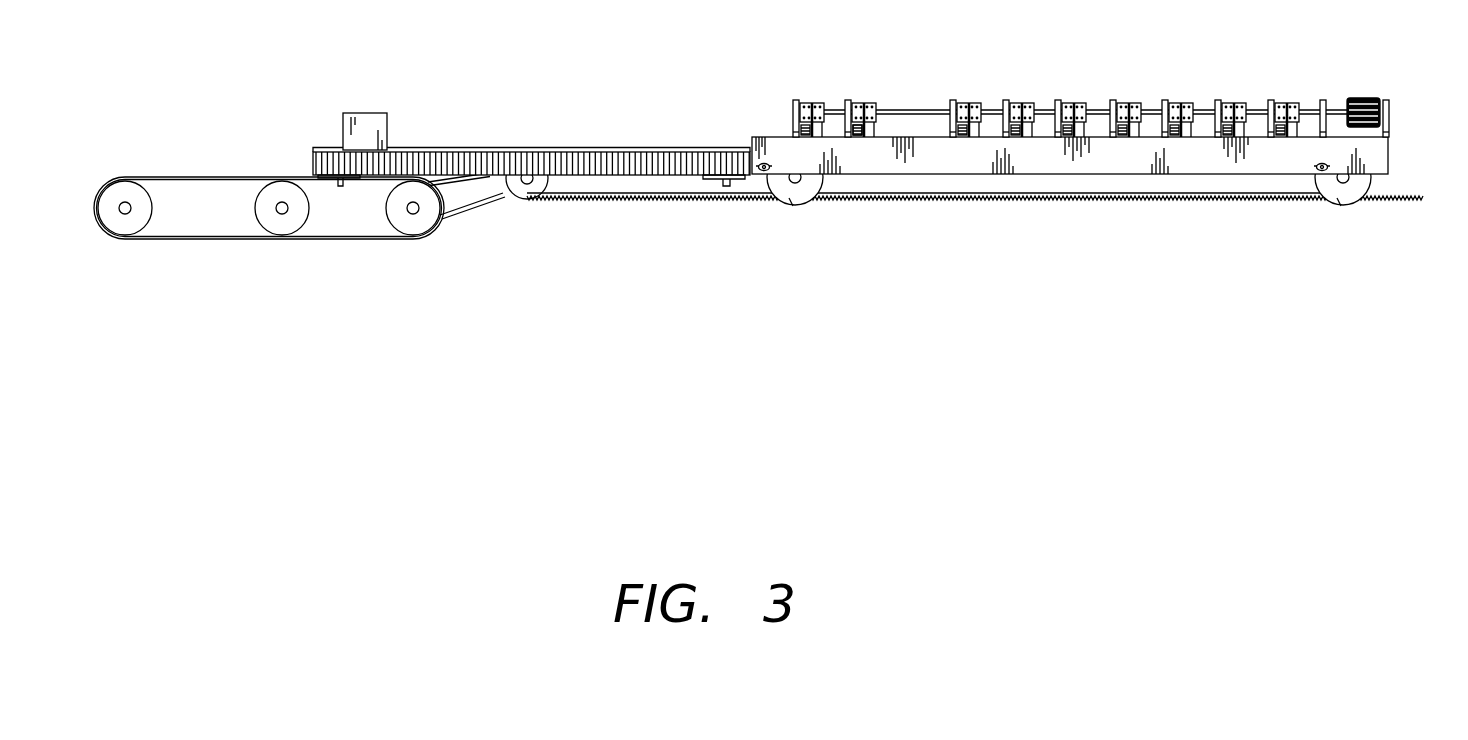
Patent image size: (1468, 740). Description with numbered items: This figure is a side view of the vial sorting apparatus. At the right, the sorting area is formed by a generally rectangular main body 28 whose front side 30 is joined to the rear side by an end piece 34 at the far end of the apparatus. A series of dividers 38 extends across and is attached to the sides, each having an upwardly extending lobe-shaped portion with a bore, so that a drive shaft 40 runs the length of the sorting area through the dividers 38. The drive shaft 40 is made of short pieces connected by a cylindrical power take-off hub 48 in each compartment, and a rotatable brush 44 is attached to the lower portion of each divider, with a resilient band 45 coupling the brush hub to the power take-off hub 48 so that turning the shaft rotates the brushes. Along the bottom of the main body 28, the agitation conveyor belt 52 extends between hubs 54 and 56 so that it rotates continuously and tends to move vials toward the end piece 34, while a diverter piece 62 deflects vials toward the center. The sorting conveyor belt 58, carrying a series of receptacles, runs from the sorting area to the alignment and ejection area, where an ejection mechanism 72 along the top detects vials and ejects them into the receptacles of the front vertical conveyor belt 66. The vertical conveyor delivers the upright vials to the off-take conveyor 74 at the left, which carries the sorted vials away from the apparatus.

The off-take conveyor 74 is at (205, 177).
The ejection mechanism 72 is at (372, 113).
The front vertical conveyor belt 66 is at (526, 150).
The diverter piece 62 is at (518, 188).
The sorting conveyor belt 58 is at (640, 200).
The hub 54 is at (797, 203).
The second agitation conveyor belt 52 is at (865, 200).
The hub 56 is at (1347, 203).
The main body 28 is at (1250, 155).
The front side 30 is at (1035, 155).
The drive shaft 40 is at (922, 110).
The divider 38 is at (1320, 100).
The rotatable brush 44 is at (852, 121).
The resilient band 45 is at (864, 128).
The power take-off hub 48 is at (1062, 103).
The end piece 34 is at (1390, 121).